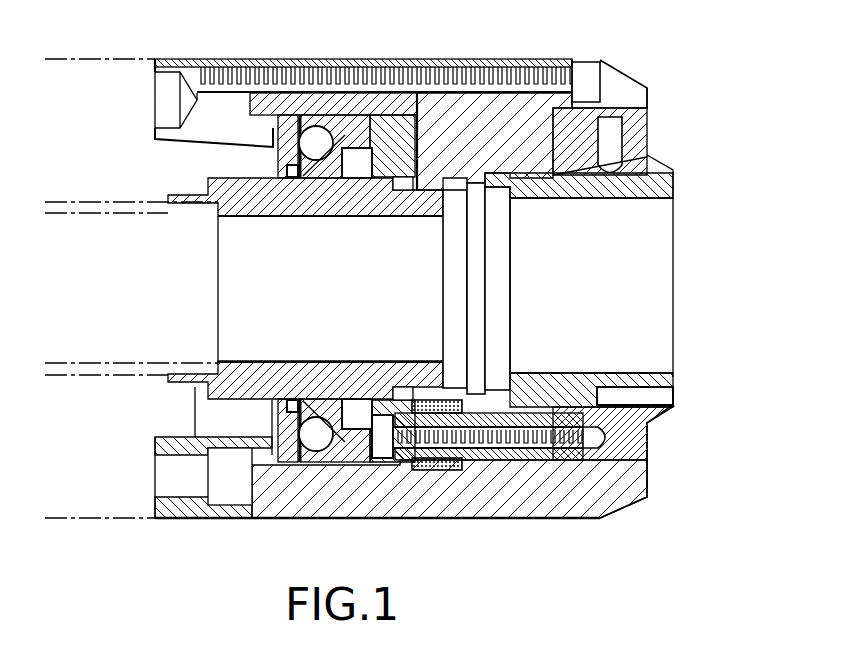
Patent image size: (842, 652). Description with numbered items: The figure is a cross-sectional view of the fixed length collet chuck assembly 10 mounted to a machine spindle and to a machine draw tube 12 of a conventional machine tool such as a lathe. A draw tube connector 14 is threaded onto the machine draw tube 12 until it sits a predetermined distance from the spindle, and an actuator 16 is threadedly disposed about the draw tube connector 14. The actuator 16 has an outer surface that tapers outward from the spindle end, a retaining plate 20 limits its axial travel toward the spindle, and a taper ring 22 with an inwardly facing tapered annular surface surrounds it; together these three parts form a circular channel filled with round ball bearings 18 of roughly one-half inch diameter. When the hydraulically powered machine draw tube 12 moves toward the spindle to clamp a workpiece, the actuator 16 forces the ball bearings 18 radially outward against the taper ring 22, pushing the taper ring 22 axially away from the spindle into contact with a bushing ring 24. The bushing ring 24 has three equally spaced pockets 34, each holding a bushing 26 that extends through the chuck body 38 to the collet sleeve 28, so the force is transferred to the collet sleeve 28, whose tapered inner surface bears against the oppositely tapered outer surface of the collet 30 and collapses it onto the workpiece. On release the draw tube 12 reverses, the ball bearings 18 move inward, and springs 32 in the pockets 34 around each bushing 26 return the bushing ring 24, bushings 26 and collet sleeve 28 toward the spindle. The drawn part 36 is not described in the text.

The fixed length collet chuck assembly 10 is at (664, 42).
The machine draw tube 12 is at (107, 227).
The draw tube connector 14 is at (253, 218).
The actuator 16 is at (333, 180).
The ball bearings 18 is at (318, 128).
The retaining plate 20 is at (278, 131).
The taper ring 22 is at (360, 115).
The bushing ring 24 is at (416, 118).
The bushings 26 is at (538, 468).
The collet sleeve 28 is at (648, 441).
The collet 30 is at (572, 384).
The springs 32 is at (458, 468).
The pockets 34 is at (426, 486).
The end plate 36 is at (157, 503).
The chuck body 38 is at (270, 521).